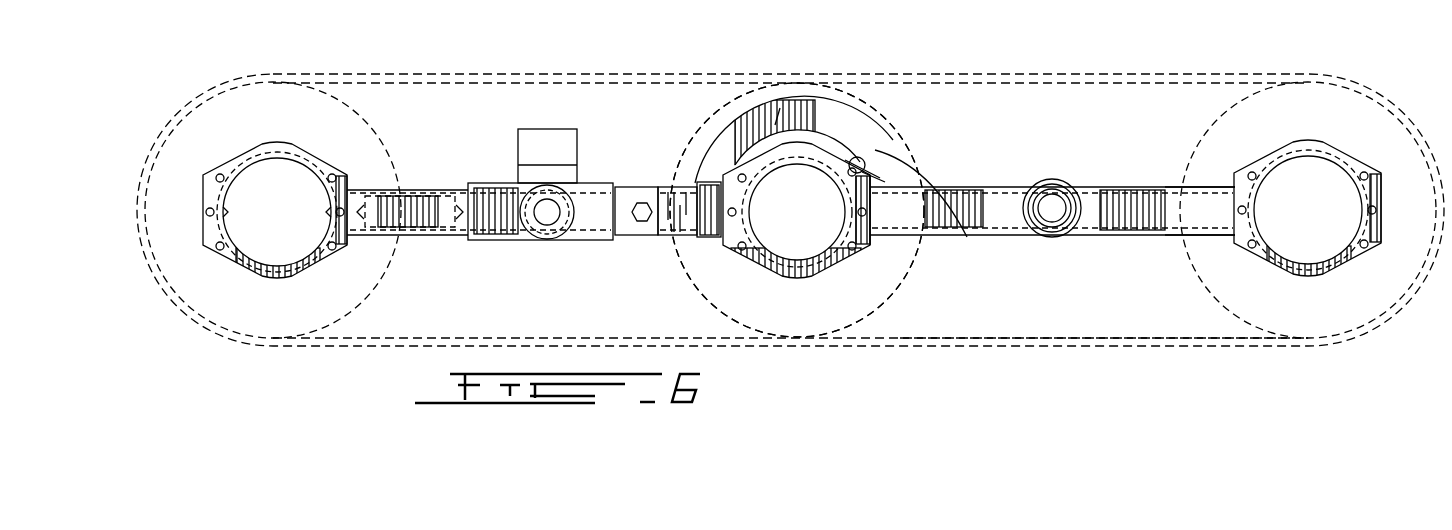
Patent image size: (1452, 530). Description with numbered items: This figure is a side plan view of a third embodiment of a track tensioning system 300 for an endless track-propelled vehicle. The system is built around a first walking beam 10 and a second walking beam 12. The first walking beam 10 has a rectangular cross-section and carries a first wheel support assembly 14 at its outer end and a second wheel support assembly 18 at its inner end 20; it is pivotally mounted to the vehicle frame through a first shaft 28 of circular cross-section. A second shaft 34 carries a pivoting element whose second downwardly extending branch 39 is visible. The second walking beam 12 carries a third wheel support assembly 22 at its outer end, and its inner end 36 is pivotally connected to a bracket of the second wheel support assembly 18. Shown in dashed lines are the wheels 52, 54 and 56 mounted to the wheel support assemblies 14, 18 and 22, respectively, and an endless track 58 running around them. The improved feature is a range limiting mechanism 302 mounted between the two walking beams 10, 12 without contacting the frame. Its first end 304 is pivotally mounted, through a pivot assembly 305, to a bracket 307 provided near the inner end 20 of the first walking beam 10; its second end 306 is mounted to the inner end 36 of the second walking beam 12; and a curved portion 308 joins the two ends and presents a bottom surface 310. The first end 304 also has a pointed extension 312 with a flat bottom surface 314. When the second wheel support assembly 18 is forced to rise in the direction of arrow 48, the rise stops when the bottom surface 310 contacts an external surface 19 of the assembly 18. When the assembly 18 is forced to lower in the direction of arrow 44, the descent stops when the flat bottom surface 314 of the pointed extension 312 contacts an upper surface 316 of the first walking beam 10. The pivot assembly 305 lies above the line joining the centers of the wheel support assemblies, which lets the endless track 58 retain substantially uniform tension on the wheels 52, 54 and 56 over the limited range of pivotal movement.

The track tensioning system 300 is at (233, 68).
The second walking beam 12 is at (428, 185).
The third wheel support assembly 22 is at (236, 172).
The wheel 56 is at (347, 318).
The second shaft 34 is at (542, 140).
The second downwardly extending branch 39 is at (545, 240).
The external surface 19 is at (794, 210).
The second end 306 is at (703, 200).
The inner end 36 is at (710, 244).
The bottom surface 310 is at (775, 130).
The second wheel support assembly 18 is at (850, 250).
The range limiting mechanism 302 is at (750, 106).
The first end 304 is at (840, 132).
The curved portion 308 is at (780, 108).
The arrow 48 is at (797, 18).
The arrow 44 is at (798, 356).
The pivot assembly 305 is at (868, 152).
The pointed extension 312 is at (878, 168).
The flat bottom surface 314 is at (878, 180).
The bracket 307 is at (934, 208).
The inner end 20 is at (872, 203).
The first walking beam 10 is at (1147, 185).
The upper surface 316 is at (1002, 187).
The first shaft 28 is at (1052, 205).
The first wheel support assembly 14 is at (1356, 166).
The wheel 52 is at (1225, 307).
The wheel 54 is at (923, 255).
The endless track 58 is at (1102, 336).